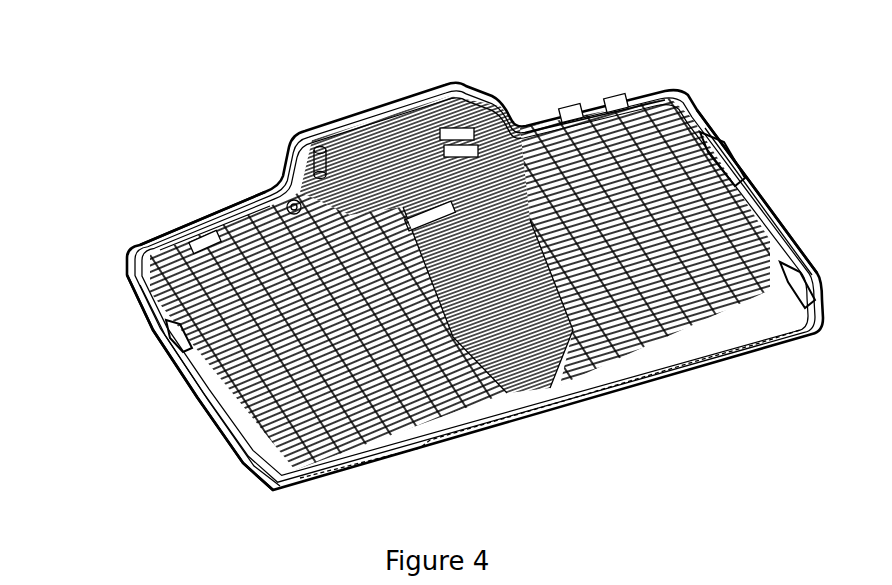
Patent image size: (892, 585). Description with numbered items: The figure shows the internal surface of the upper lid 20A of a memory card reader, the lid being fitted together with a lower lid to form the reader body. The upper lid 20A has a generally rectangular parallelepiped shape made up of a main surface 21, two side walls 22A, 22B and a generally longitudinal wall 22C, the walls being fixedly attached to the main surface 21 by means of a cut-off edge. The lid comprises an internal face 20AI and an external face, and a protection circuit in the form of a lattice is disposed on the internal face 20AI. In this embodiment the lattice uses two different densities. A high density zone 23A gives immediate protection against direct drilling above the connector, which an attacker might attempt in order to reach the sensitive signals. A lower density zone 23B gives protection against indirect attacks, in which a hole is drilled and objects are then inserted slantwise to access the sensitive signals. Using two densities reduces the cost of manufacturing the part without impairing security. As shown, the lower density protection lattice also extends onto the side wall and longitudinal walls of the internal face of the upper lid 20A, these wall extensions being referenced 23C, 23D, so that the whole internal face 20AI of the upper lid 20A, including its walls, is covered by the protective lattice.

The upper lid 20A is at (190, 177).
The internal face 20AI is at (330, 357).
The main surface 21 is at (333, 308).
The side wall 22A is at (173, 353).
The side wall 22B is at (755, 195).
The longitudinal wall 22C is at (253, 197).
The high density zone 23A is at (423, 213).
The lower density zone 23B is at (373, 330).
The lower density lattice on longitudinal wall 23C is at (577, 127).
The lower density lattice on side wall 23D is at (740, 170).